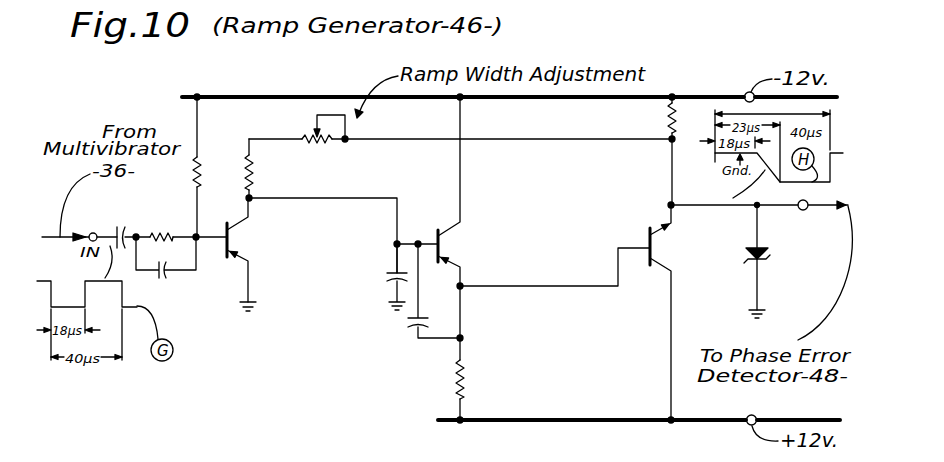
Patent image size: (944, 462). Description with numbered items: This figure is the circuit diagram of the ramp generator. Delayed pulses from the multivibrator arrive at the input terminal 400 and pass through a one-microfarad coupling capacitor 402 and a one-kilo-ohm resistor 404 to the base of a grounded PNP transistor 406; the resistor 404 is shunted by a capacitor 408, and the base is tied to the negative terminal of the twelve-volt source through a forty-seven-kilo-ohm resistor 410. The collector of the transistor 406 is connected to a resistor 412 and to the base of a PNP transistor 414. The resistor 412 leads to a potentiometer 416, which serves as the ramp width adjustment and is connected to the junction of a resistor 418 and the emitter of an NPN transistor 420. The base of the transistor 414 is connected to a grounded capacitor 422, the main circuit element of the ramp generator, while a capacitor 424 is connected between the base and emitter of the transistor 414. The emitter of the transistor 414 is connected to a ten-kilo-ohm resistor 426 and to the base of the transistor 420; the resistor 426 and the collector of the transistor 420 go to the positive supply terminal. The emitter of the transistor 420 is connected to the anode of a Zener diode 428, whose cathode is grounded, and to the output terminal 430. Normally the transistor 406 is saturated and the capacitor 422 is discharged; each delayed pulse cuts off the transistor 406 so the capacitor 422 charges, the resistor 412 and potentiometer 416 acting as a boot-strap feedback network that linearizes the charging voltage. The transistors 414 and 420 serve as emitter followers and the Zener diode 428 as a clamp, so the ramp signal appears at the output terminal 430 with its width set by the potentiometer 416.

The input terminal 400 is at (93, 232).
The coupling capacitor 402 is at (114, 228).
The resistor 404 is at (170, 232).
The PNP transistor 406 is at (230, 257).
The capacitor 408 is at (162, 280).
The resistor 410 is at (199, 160).
The resistor 412 is at (252, 172).
The PNP transistor 414 is at (437, 231).
The potentiometer 416 is at (325, 143).
The resistor 418 is at (668, 121).
The NPN transistor 420 is at (648, 236).
The capacitor 422 is at (387, 272).
The capacitor 424 is at (412, 327).
The resistor 426 is at (464, 371).
The Zener diode 428 is at (765, 262).
The output terminal 430 is at (806, 212).